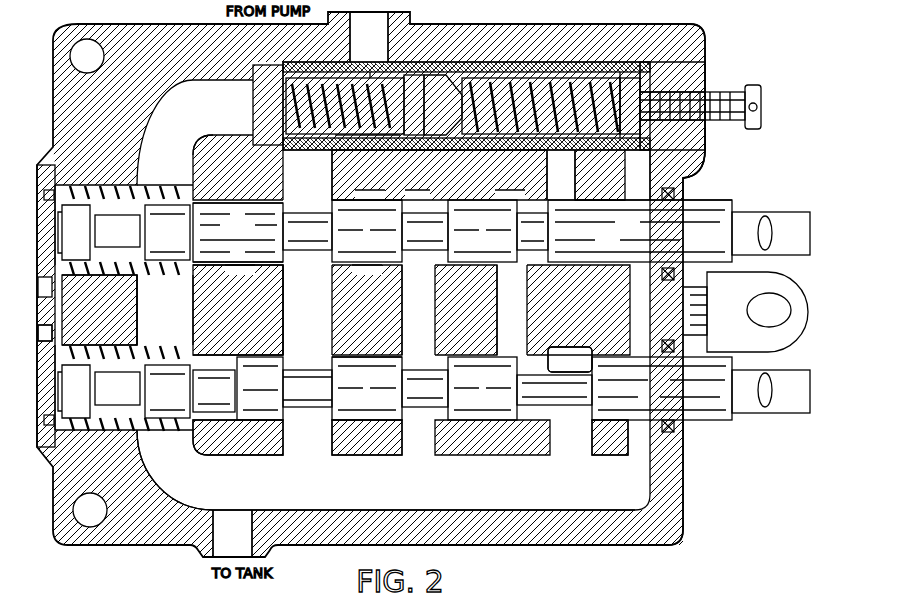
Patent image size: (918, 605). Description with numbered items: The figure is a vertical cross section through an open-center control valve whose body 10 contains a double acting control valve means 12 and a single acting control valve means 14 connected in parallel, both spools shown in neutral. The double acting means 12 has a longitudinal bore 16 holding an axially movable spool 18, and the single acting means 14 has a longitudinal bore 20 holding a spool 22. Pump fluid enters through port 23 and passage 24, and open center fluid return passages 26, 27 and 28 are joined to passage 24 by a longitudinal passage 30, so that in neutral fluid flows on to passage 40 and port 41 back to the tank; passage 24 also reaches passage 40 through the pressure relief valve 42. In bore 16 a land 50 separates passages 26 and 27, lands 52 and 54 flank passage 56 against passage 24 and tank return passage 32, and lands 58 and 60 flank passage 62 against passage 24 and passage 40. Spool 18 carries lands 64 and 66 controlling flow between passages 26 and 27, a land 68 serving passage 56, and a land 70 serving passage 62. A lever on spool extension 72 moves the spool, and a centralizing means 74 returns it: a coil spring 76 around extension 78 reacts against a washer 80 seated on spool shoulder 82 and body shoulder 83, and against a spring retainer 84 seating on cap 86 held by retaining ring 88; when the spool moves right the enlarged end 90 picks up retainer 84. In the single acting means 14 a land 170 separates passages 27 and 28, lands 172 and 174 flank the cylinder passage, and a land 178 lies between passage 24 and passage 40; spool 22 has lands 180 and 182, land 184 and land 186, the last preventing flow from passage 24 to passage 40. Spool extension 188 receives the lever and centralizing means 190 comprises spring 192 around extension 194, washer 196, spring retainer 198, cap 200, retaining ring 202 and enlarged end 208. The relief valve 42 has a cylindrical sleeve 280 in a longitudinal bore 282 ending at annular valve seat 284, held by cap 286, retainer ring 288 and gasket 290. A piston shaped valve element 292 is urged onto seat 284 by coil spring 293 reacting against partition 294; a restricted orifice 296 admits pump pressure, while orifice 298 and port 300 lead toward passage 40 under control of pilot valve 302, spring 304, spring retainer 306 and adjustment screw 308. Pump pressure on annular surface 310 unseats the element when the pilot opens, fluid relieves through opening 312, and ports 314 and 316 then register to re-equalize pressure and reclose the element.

The body 10 is at (150, 36).
The double acting control valve means 12 is at (700, 193).
The single acting control valve means 14 is at (696, 436).
The longitudinal bore 16 is at (660, 204).
The spool 18 is at (629, 238).
The longitudinal bore 20 is at (650, 366).
The spool 22 is at (617, 396).
The port 23 is at (392, 20).
The passage 24 is at (297, 320).
The open center fluid return passage 26 is at (550, 184).
The open center fluid return passage 27 is at (502, 320).
The open center fluid return passage 28 is at (564, 365).
The longitudinal passage 30 is at (487, 150).
The tank return passage 32 is at (412, 320).
The passage 40 is at (412, 490).
The port 41 is at (240, 522).
The pressure relief valve 42 is at (440, 62).
The land 50 is at (548, 205).
The land 52 is at (342, 200).
The land 54 is at (386, 201).
The passage 56 is at (375, 270).
The land 58 is at (238, 232).
The land 60 is at (200, 204).
The passage 62 is at (258, 272).
The land 64 is at (610, 200).
The land 66 is at (476, 263).
The land 68 is at (340, 246).
The land 70 is at (225, 272).
The spool extension 72 is at (785, 215).
The centralizing means 74 is at (102, 314).
The coil spring 76 is at (147, 185).
The extension 78 is at (193, 243).
The washer 80 is at (193, 280).
The shoulder 82 is at (188, 221).
The shoulder 83 is at (195, 172).
The spring retainer 84 is at (66, 236).
The cap 86 is at (44, 182).
The retaining ring 88 is at (60, 172).
The enlarged end 90 is at (97, 231).
The land 170 is at (545, 418).
The land 172 is at (342, 358).
The land 174 is at (388, 359).
The land 178 is at (256, 360).
The land 180 is at (610, 445).
The land 182 is at (480, 442).
The land 184 is at (348, 440).
The land 186 is at (262, 434).
The spool extension 188 is at (795, 420).
The centralizing means 190 is at (150, 455).
The spring 192 is at (170, 430).
The extension 194 is at (153, 394).
The washer 196 is at (233, 384).
The spring retainer 198 is at (76, 442).
The cap 200 is at (55, 400).
The retaining ring 202 is at (43, 460).
The enlarged end 208 is at (110, 394).
The cylindrical sleeve 280 is at (545, 62).
The longitudinal bore 282 is at (600, 62).
The annular valve seat 284 is at (253, 118).
The cap 286 is at (705, 60).
The retainer ring 288 is at (704, 152).
The gasket 290 is at (702, 40).
The piston shaped valve element 292 is at (253, 95).
The coil spring 293 is at (370, 72).
The partition 294 is at (430, 138).
The restricted orifice 296 is at (414, 75).
The orifice 298 is at (452, 76).
The port 300 is at (625, 135).
The pilot valve 302 is at (480, 78).
The spring 304 is at (640, 62).
The spring retainer 306 is at (692, 86).
The adjustment screw 308 is at (762, 116).
The annular surface 310 is at (320, 150).
The opening 312 is at (312, 175).
The port 314 is at (366, 140).
The port 316 is at (340, 140).